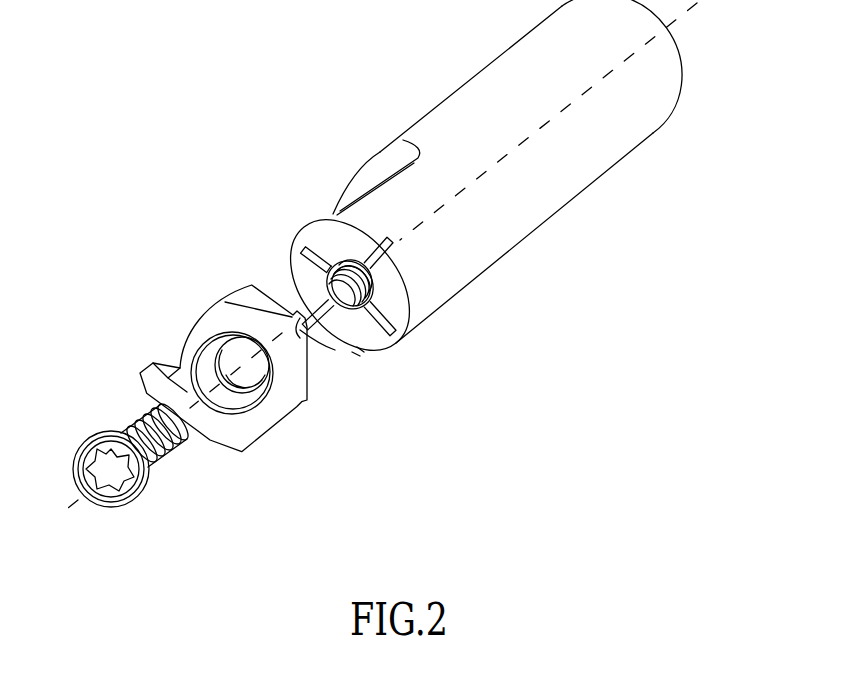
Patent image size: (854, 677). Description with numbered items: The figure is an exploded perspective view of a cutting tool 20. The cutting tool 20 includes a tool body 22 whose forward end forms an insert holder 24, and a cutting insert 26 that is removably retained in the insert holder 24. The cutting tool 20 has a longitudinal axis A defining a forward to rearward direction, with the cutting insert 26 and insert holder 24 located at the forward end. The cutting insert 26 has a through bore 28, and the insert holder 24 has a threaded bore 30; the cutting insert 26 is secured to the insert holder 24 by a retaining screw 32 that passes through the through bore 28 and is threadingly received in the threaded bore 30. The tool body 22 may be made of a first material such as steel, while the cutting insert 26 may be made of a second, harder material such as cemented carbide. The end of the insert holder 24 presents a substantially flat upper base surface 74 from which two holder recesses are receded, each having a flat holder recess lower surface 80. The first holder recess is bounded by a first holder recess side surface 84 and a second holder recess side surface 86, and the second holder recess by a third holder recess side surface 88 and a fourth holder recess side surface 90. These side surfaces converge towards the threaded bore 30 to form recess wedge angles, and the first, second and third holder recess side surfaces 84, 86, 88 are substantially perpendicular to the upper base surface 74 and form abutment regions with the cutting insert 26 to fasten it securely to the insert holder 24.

The cutting tool 20 is at (513, 397).
The tool body 22 is at (387, 102).
The insert holder 24 is at (248, 160).
The cutting insert 26 is at (148, 325).
The through bore 28 is at (213, 378).
The threaded bore 30 is at (362, 318).
The retaining screw 32 is at (122, 485).
The upper base surface 74 is at (303, 282).
The holder recess lower surface 80 is at (338, 233).
The first holder recess side surface 84 is at (387, 253).
The second holder recess side surface 86 is at (327, 237).
The third holder recess side surface 88 is at (390, 305).
The fourth holder recess side surface 90 is at (335, 350).
The longitudinal axis A is at (387, 254).